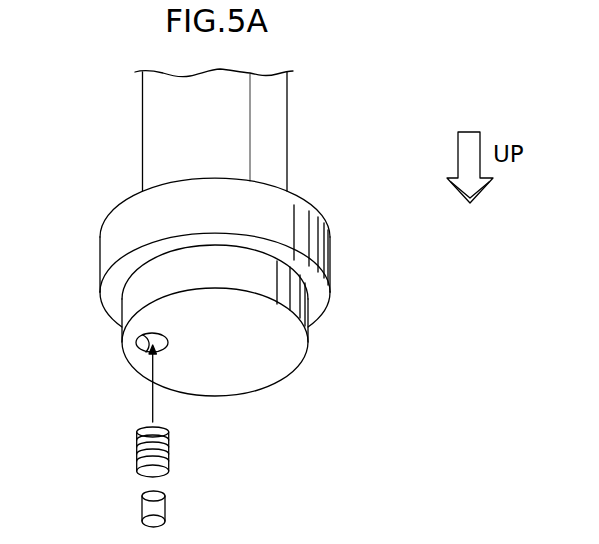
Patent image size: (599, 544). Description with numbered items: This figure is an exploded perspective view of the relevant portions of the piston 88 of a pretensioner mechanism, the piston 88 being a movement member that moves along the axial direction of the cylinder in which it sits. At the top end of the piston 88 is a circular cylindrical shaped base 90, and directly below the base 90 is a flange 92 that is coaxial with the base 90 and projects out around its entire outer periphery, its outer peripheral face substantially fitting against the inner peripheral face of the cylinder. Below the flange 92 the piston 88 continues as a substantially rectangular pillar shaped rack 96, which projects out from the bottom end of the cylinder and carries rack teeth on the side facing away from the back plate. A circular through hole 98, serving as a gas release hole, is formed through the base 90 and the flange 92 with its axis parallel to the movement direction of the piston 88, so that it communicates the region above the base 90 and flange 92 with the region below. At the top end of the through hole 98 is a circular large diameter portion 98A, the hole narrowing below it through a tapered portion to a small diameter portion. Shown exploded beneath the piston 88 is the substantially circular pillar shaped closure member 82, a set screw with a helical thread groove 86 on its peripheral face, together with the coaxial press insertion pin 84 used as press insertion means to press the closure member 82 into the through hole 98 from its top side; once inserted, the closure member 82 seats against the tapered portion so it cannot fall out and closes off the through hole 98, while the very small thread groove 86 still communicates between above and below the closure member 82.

The closure member 82 is at (136, 445).
The press insertion pin 84 is at (142, 505).
The thread groove 86 is at (169, 447).
The piston 88 is at (141, 128).
The base 90 is at (263, 370).
The flange 92 is at (330, 272).
The rack 96 is at (287, 130).
The through hole 98 is at (143, 347).
The large diameter portion 98A is at (145, 350).